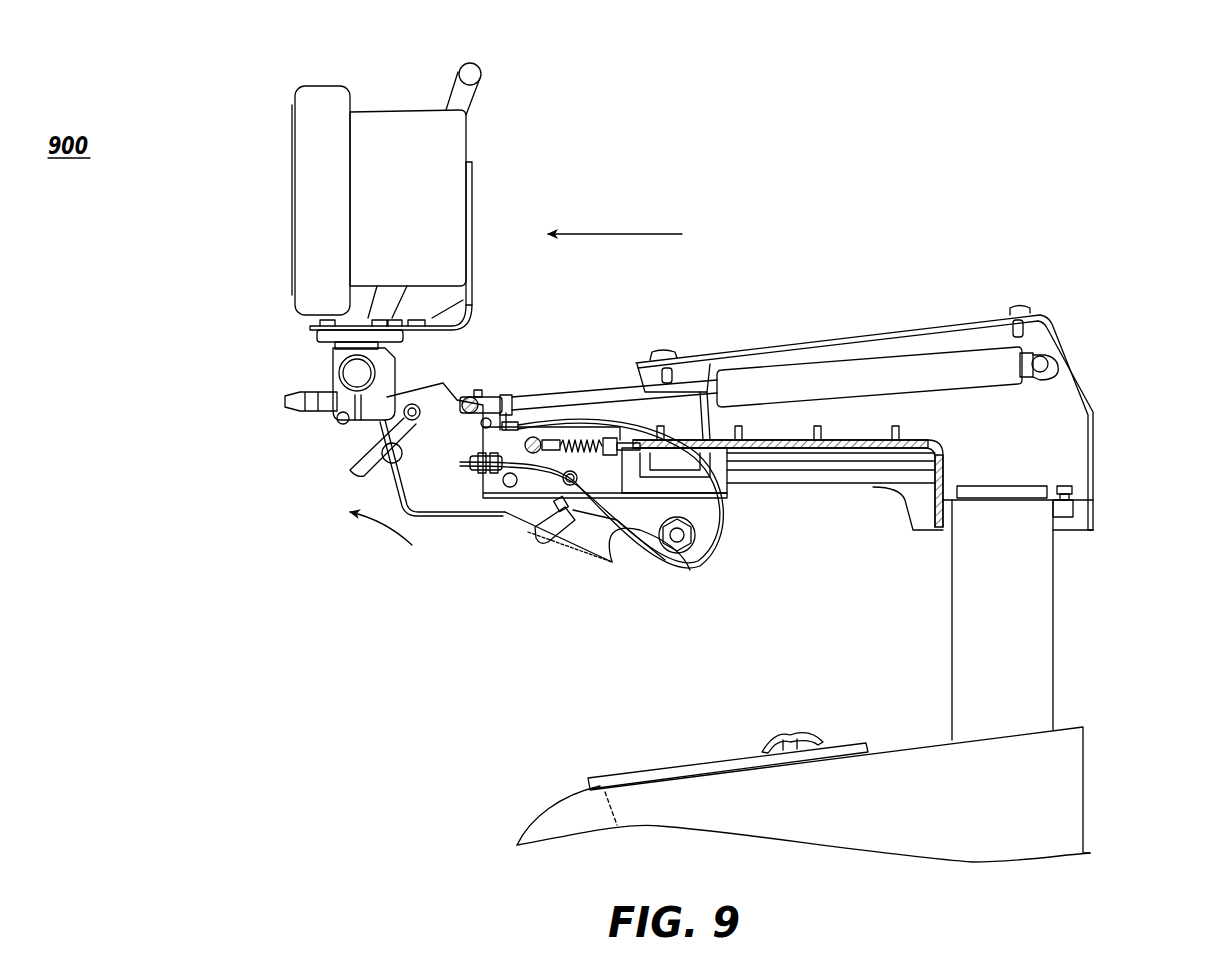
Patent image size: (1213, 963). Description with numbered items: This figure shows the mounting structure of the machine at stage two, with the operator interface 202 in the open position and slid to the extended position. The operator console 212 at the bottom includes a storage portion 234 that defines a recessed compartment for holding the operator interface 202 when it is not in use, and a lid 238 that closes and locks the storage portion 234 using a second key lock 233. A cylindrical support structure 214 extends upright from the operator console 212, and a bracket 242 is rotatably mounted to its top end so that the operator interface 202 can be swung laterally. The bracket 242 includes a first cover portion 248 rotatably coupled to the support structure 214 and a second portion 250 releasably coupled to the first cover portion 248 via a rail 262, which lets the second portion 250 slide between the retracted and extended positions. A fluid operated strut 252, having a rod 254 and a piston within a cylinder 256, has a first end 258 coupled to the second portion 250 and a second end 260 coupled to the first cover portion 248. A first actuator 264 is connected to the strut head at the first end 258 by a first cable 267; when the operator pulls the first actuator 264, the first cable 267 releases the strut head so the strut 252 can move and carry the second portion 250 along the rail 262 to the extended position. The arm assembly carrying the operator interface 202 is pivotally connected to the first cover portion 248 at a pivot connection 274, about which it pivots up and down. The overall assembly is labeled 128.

The cutting assembly 128 is at (1122, 168).
The operator interface 202 is at (405, 104).
The operator console 212 is at (1088, 778).
The support structure 214 is at (1048, 622).
The second key lock 233 is at (790, 738).
The storage portion 234 is at (552, 805).
The lid 238 is at (657, 767).
The bracket 242 is at (962, 338).
The first cover portion 248 is at (851, 352).
The second portion 250 is at (427, 488).
The fluid operated strut 252 is at (778, 385).
The rod 254 is at (578, 400).
The cylinder 256 is at (1000, 360).
The first end 258 is at (512, 392).
The second end 260 is at (1038, 345).
The rail 262 is at (778, 450).
The first actuator 264 is at (352, 465).
The first cable 267 is at (634, 555).
The pivot connection 274 is at (678, 540).